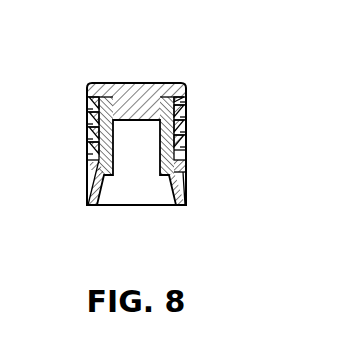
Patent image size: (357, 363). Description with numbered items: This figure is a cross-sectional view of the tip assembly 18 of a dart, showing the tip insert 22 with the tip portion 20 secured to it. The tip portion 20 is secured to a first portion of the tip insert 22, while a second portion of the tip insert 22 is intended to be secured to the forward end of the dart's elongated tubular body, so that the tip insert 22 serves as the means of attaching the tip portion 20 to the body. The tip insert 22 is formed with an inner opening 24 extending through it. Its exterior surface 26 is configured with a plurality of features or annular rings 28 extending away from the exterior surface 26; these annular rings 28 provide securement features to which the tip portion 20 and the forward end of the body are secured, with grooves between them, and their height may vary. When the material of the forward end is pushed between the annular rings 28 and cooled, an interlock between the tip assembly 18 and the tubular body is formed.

The tip assembly 18 is at (198, 102).
The tip portion 20 is at (131, 84).
The tip insert 22 is at (88, 187).
The inner opening 24 is at (120, 205).
The exterior surface 26 is at (90, 167).
The annular rings 28 is at (90, 159).